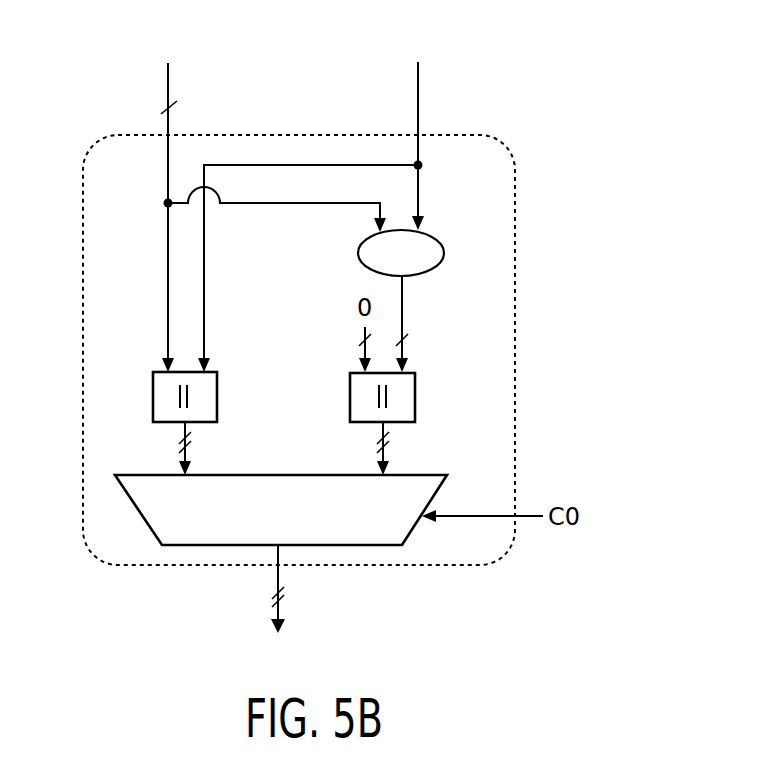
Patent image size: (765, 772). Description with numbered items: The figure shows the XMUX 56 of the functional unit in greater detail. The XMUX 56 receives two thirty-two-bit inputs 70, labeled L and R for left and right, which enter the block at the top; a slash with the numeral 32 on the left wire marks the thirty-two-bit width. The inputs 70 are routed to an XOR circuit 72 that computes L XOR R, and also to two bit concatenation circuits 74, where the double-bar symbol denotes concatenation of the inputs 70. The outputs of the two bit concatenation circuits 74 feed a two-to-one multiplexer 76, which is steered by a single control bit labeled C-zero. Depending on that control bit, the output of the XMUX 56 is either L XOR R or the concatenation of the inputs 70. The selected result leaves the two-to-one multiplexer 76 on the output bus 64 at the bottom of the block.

The 32-bit inputs 70 is at (168, 83).
The 32-bit bus width indicator 32 is at (152, 109).
The XMUX 56 is at (574, 188).
The XOR circuit 72 is at (427, 275).
The bit concatenation circuits 74 is at (217, 380).
The 2-to-1 multiplexer 76 is at (263, 470).
The 32-bit inputs 64 is at (294, 589).